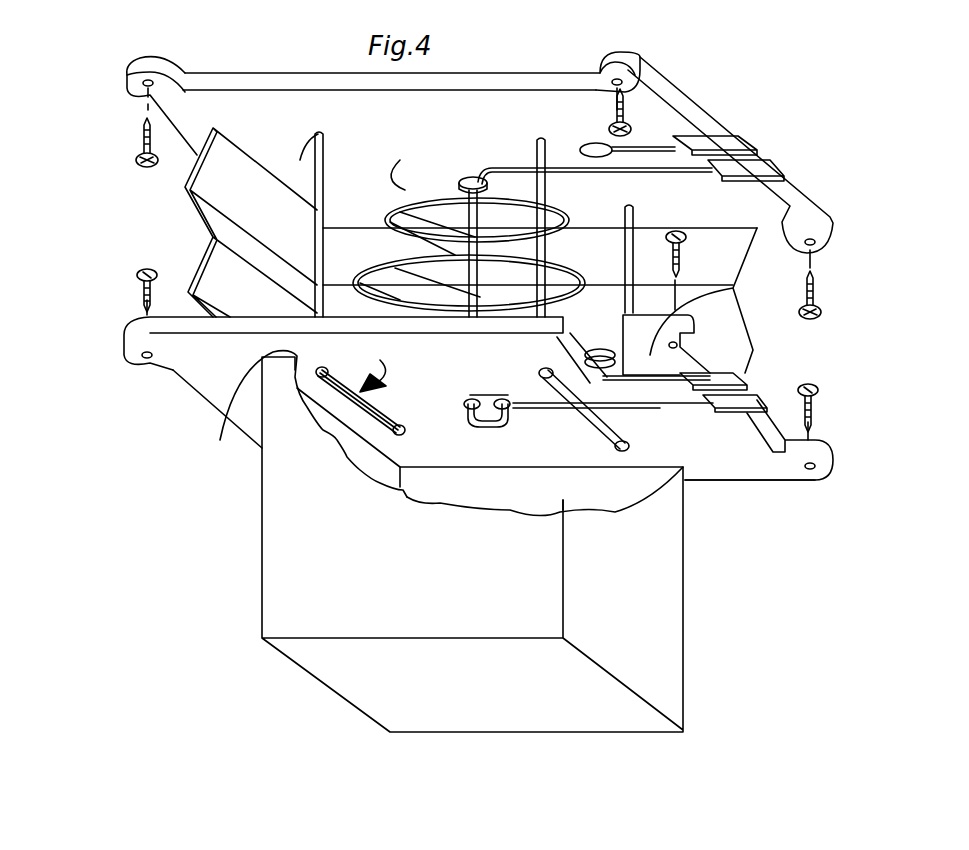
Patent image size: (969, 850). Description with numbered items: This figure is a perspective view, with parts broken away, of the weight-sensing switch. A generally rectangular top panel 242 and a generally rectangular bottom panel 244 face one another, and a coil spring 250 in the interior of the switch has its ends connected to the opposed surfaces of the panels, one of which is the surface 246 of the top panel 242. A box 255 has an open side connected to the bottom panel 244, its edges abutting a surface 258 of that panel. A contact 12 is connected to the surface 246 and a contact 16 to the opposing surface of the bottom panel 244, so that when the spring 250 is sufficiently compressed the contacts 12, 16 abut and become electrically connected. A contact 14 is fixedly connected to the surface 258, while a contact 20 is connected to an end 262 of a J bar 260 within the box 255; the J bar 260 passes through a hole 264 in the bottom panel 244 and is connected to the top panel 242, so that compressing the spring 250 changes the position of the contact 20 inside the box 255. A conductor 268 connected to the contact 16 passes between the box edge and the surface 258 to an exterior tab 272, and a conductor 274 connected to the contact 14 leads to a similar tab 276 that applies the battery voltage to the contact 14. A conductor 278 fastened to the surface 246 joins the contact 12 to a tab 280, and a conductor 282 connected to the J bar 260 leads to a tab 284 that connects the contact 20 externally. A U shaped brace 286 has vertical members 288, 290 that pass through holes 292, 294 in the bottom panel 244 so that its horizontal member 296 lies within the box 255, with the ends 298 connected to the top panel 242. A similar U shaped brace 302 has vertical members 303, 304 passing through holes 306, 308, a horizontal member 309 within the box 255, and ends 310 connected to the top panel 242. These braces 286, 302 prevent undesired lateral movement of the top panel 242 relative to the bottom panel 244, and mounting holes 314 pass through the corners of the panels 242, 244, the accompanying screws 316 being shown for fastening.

The contact 12 is at (592, 143).
The contact 14 is at (490, 400).
The contact 16 is at (605, 345).
The contact 20 is at (515, 400).
The top panel 242 is at (126, 74).
The bottom panel 244 is at (124, 328).
The surface 246 is at (270, 115).
The coil spring 250 is at (565, 262).
The box 255 is at (686, 580).
The surface 258 is at (222, 372).
The J bar 260 is at (400, 270).
The end 262 is at (510, 452).
The hole 264 is at (470, 400).
The conductor 268 is at (736, 290).
The tab 272 is at (735, 335).
The conductor 274 is at (678, 410).
The tab 276 is at (770, 400).
The conductor 278 is at (662, 125).
The tab 280 is at (756, 143).
The conductor 282 is at (690, 178).
The tab 284 is at (770, 170).
The U shaped brace 286 is at (359, 364).
The vertical member 288 is at (325, 185).
The vertical member 290 is at (417, 207).
The hole 292 is at (237, 428).
The hole 294 is at (412, 475).
The horizontal member 296 is at (373, 413).
The ends 298 is at (314, 135).
The U shaped brace 302 is at (597, 437).
The vertical member 303 is at (550, 186).
The vertical member 304 is at (633, 212).
The hole 306 is at (551, 368).
The hole 308 is at (640, 470).
The horizontal member 309 is at (575, 455).
The ends 310 is at (542, 135).
The mounting holes 314 is at (143, 87).
The screw 316 is at (137, 142).